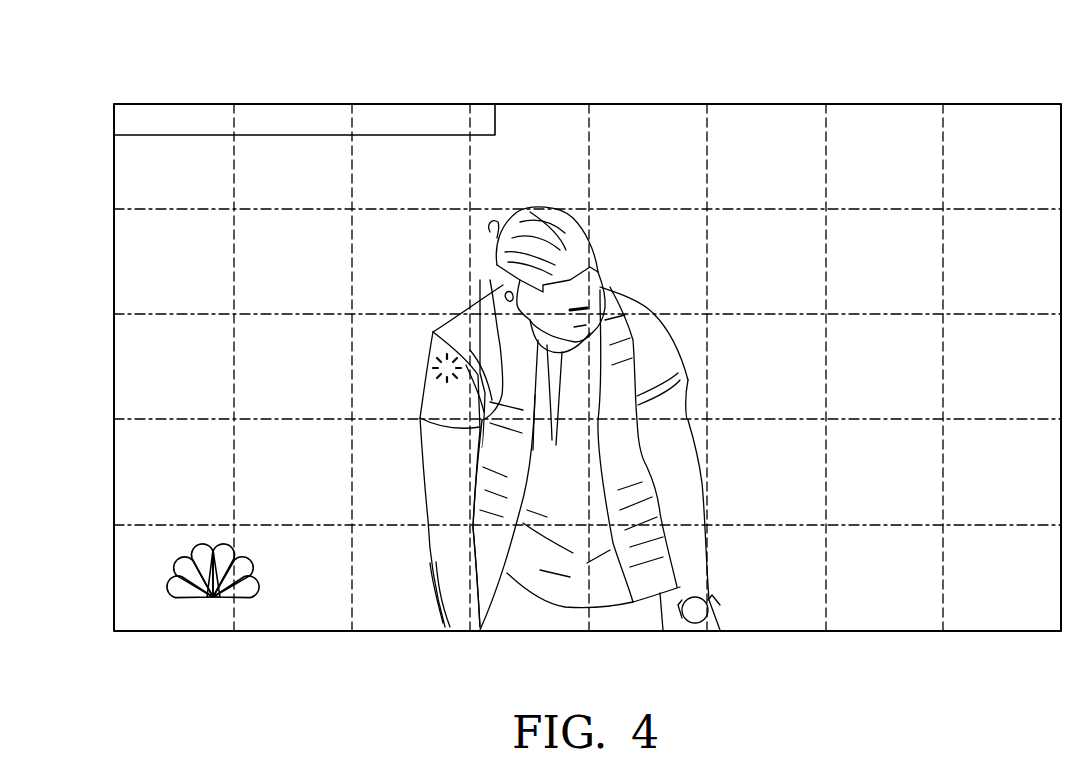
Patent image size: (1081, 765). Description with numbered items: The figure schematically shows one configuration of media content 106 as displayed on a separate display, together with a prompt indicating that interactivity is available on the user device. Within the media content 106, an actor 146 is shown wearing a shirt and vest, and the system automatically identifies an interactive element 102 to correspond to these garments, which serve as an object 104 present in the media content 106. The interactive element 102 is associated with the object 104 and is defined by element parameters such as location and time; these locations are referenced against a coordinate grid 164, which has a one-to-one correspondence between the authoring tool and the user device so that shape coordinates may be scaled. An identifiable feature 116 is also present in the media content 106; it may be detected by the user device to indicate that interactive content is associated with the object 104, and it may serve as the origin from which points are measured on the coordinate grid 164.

The media content 106 is at (563, 103).
The coordinate grid 164 is at (880, 210).
The object 104 is at (623, 373).
The actor 146 is at (645, 307).
The interactive element 102 is at (429, 367).
The identifiable feature 116 is at (168, 557).